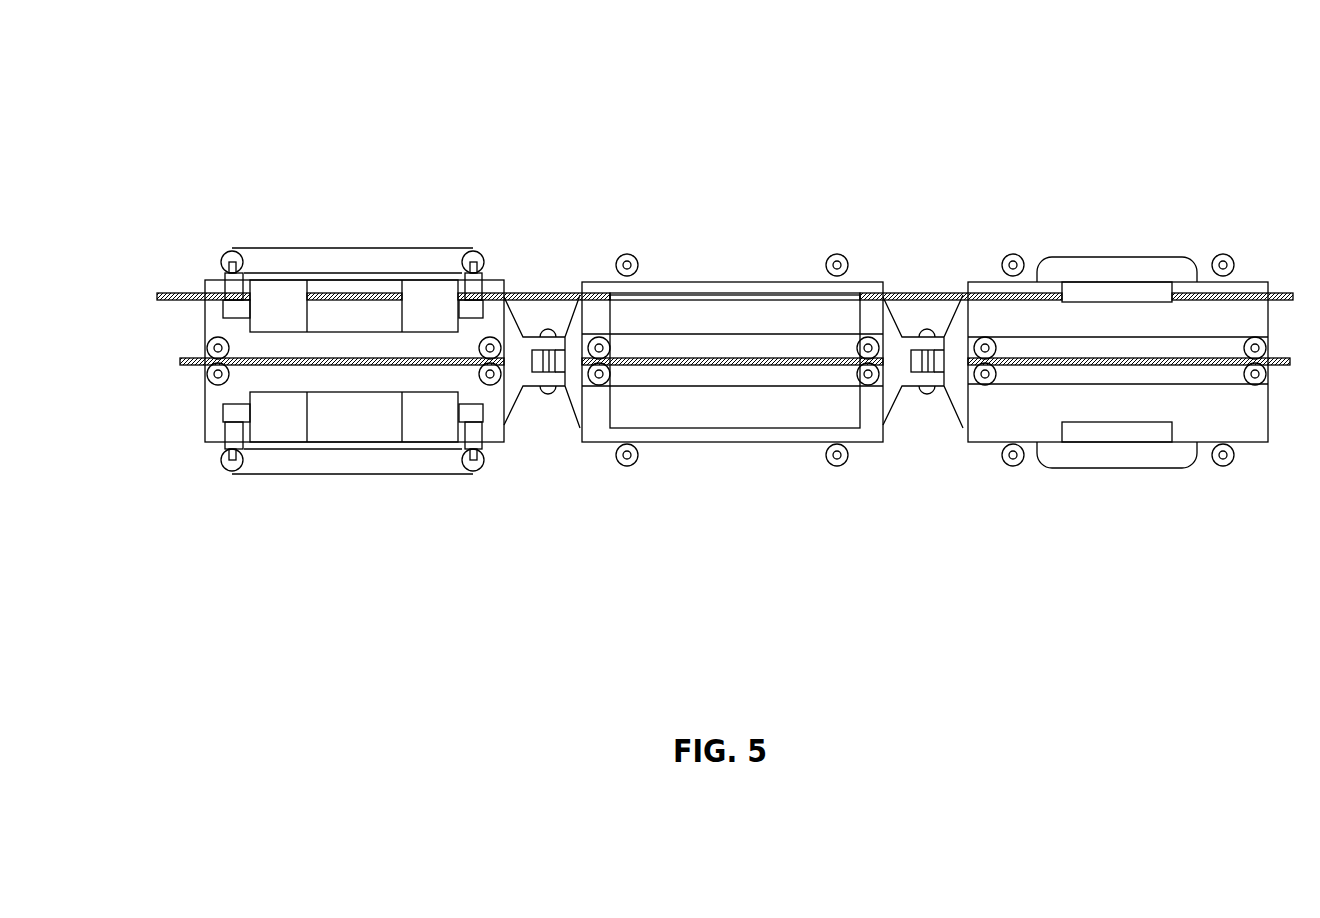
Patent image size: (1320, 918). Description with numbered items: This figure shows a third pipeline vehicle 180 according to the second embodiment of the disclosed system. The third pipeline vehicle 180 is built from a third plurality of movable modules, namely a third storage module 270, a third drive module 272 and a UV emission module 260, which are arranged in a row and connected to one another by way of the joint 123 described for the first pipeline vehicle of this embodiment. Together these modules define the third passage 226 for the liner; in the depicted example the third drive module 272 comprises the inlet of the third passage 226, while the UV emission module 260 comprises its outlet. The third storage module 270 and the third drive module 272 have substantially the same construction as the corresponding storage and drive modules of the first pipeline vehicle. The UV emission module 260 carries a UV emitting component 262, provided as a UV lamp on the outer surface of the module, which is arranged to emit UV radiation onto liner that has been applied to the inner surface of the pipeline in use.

The third pipeline vehicle 180 is at (750, 85).
The joint 123 is at (543, 330).
The third drive module 272 is at (204, 413).
The third storage module 270 is at (793, 442).
The UV emission module 260 is at (1134, 350).
The UV emitting component 262 is at (1145, 257).
The third passage 226 is at (1225, 337).